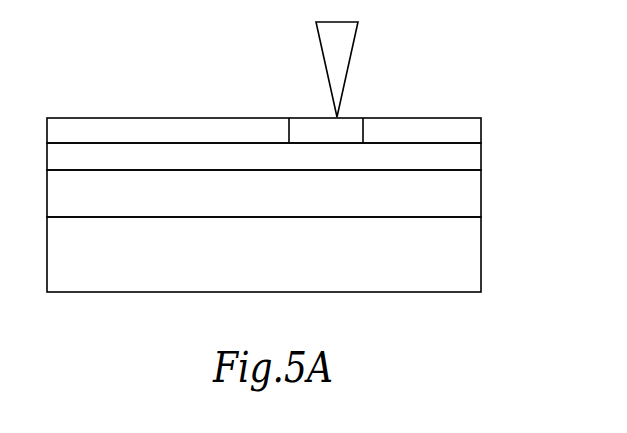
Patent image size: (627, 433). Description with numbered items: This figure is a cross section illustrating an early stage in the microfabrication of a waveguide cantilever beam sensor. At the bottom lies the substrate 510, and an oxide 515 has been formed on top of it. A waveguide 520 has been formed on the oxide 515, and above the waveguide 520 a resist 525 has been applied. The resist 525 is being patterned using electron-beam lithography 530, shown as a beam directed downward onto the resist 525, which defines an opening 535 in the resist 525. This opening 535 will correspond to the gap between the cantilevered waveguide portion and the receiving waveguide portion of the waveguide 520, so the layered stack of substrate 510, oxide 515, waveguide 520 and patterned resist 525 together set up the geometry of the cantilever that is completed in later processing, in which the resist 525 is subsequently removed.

The substrate 510 is at (476, 266).
The oxide 515 is at (473, 207).
The waveguide 520 is at (470, 159).
The resist 525 is at (462, 128).
The electron-beam lithography 530 is at (327, 42).
The opening 535 is at (348, 128).